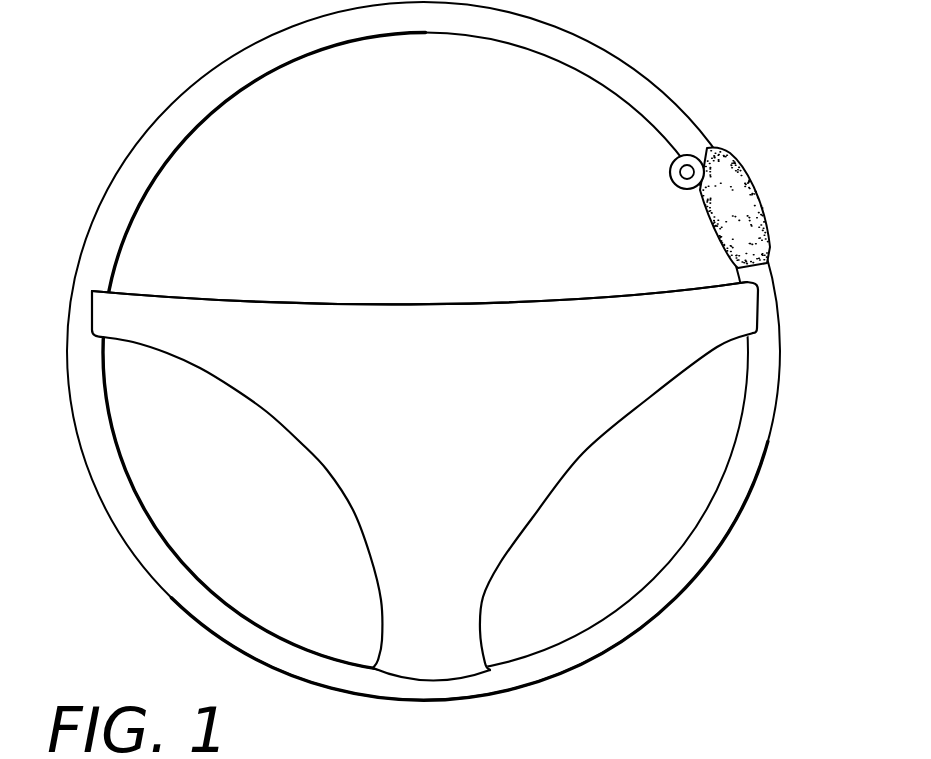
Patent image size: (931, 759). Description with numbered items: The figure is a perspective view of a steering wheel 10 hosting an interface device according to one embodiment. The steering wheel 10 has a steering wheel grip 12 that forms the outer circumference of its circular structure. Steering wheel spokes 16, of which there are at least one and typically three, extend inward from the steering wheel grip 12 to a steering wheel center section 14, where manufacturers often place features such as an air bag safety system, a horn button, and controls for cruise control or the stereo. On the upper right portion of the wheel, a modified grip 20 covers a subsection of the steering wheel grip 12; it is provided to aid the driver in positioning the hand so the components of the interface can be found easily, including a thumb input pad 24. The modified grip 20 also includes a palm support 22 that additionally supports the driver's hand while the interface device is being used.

The steering wheel 10 is at (465, 351).
The steering wheel grip 12 is at (672, 588).
The steering wheel center section 14 is at (420, 418).
The steering wheel spoke 16 is at (160, 312).
The modified grip 20 is at (737, 211).
The palm support 22 is at (760, 195).
The thumb input pad 24 is at (680, 173).